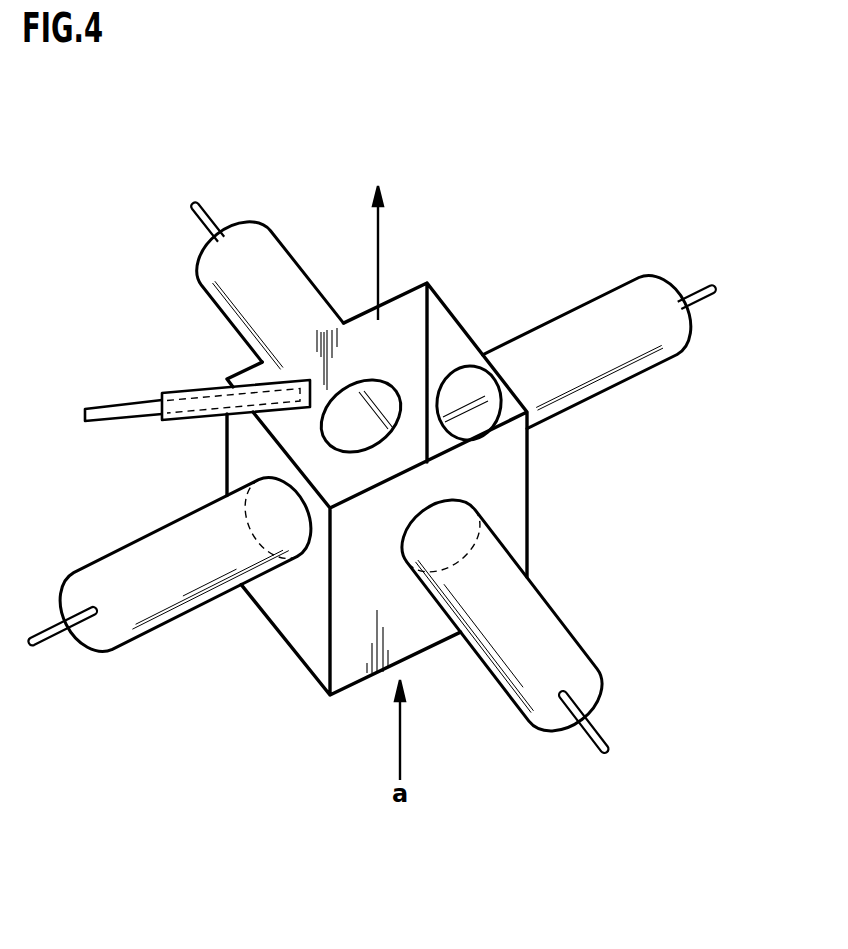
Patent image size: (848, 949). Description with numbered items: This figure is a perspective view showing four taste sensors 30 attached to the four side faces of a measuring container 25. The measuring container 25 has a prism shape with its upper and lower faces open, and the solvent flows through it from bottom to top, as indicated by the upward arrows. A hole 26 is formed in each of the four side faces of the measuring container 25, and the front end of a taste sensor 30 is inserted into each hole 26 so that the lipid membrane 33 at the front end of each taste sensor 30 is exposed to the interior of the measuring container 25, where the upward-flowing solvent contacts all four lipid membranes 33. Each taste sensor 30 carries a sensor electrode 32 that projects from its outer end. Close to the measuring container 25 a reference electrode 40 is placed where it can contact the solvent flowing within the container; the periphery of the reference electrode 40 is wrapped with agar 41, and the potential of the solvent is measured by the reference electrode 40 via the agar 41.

The measuring container 25 is at (455, 317).
The hole 26 is at (450, 377).
The taste sensor 30 is at (140, 540).
The sensor electrode 32 is at (55, 640).
The lipid membrane 33 is at (368, 432).
The reference electrode 40 is at (205, 390).
The agar 41 is at (187, 420).